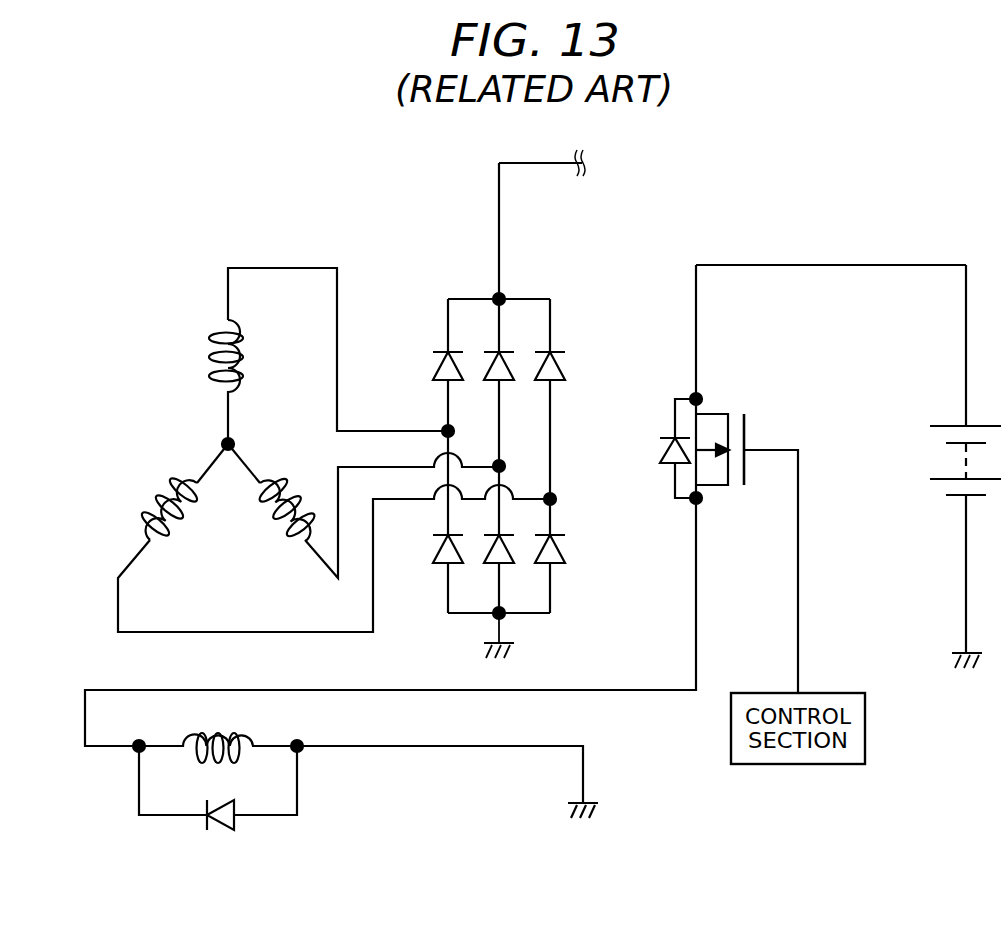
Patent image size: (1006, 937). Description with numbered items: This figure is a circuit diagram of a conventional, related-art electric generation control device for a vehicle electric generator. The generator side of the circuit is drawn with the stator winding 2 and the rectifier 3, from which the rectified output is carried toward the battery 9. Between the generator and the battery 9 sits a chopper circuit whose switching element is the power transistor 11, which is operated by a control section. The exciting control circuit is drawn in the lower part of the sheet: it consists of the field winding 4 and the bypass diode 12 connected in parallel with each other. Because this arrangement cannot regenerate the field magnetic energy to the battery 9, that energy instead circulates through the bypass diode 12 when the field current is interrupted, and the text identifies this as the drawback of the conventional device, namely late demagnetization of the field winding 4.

The stator winding (armature coil) 2 is at (201, 326).
The rectifier (three-phase full-wave) 3 is at (464, 285).
The field winding 4 is at (252, 735).
The battery 9 is at (946, 426).
The power transistor 11 is at (710, 413).
The bypass diode 12 is at (217, 832).